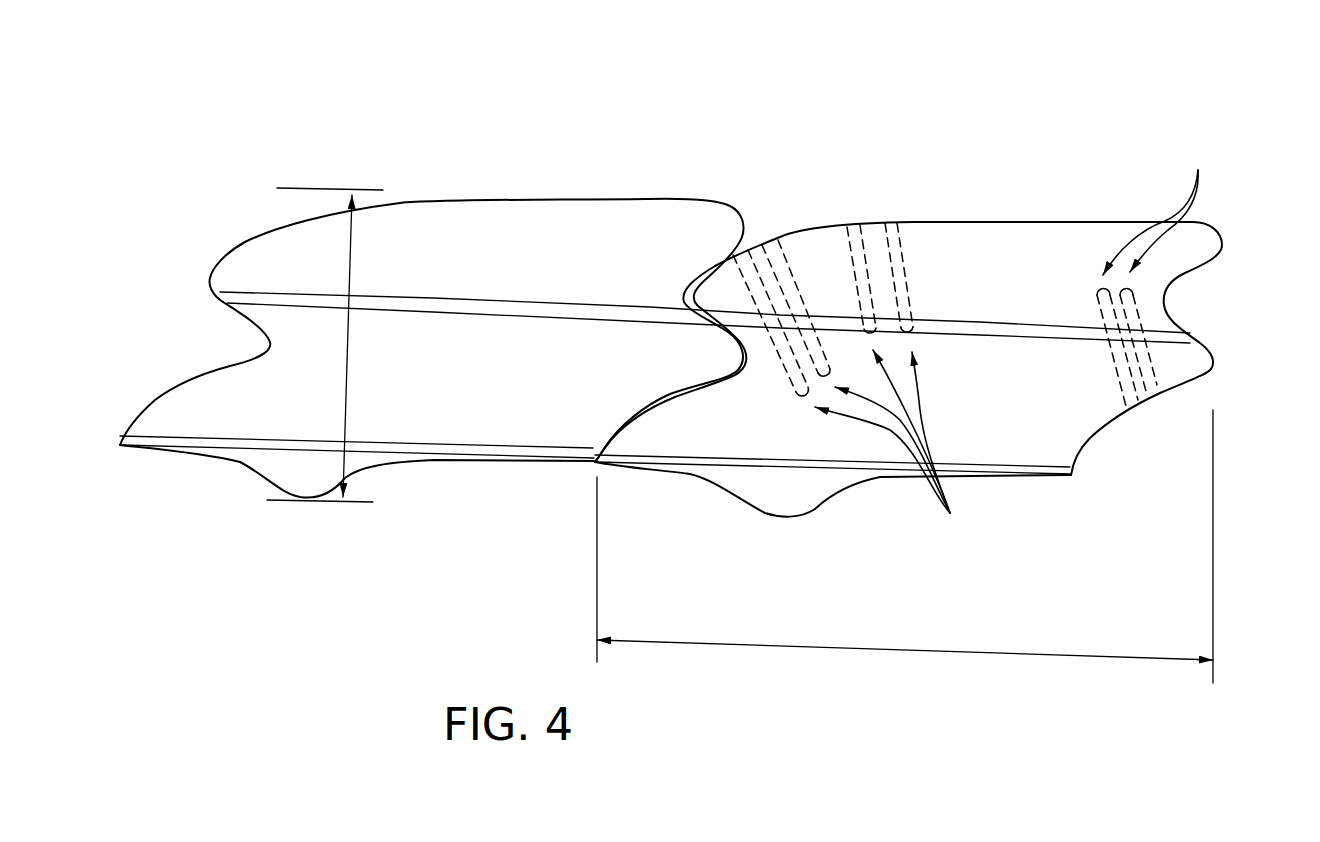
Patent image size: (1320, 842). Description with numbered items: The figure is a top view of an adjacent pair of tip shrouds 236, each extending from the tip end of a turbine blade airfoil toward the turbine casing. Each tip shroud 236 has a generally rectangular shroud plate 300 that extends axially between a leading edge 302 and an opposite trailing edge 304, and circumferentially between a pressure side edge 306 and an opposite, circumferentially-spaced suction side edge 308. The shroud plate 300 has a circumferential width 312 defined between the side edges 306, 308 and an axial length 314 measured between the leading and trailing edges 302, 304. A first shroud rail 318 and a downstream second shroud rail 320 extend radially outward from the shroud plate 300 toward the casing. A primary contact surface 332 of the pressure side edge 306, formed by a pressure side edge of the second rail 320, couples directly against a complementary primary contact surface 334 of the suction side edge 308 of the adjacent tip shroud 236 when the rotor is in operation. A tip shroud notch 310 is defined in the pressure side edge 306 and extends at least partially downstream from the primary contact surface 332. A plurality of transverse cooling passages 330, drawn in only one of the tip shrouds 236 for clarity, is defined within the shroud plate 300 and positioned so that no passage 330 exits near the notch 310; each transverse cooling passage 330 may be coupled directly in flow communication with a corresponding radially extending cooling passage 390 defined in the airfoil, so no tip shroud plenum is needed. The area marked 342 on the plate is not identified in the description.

The tip shroud 236 is at (613, 170).
The shroud plate 300 is at (647, 203).
The leading edge 302 is at (510, 460).
The trailing edge 304 is at (490, 202).
The pressure side edge 306 is at (647, 397).
The suction side edge 308 is at (183, 383).
The tip shroud notch 310 is at (1200, 292).
The circumferential width 312 is at (880, 650).
The axial length 314 is at (343, 427).
The first shroud rail 318 is at (447, 453).
The second shroud rail 320 is at (427, 308).
The transverse cooling passages 330 is at (787, 290).
The primary contact surface 332 is at (703, 303).
The primary contact surface 334 is at (223, 302).
The airfoil body 342 is at (502, 392).
The radially extending cooling passage 390 is at (950, 527).